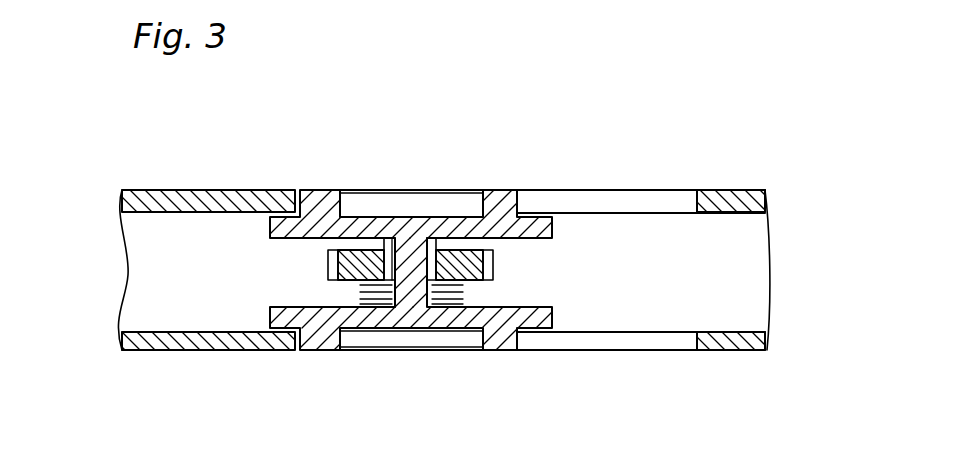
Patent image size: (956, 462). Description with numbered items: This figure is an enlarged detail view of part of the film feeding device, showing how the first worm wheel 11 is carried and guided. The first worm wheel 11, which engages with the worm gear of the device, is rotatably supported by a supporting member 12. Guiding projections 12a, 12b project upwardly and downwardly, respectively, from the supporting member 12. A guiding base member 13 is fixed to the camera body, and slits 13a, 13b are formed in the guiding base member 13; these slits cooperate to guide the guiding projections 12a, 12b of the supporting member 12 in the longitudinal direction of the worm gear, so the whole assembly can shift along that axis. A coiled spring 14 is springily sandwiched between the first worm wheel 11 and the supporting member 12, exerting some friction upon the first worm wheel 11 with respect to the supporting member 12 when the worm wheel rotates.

The first worm wheel 11 is at (332, 264).
The supporting member 12 is at (292, 308).
The guiding projection 12a is at (498, 190).
The guiding projection 12b is at (487, 350).
The guiding base member 13 is at (735, 197).
The slit 13a is at (632, 198).
The slit 13b is at (632, 343).
The coiled spring 14 is at (455, 292).